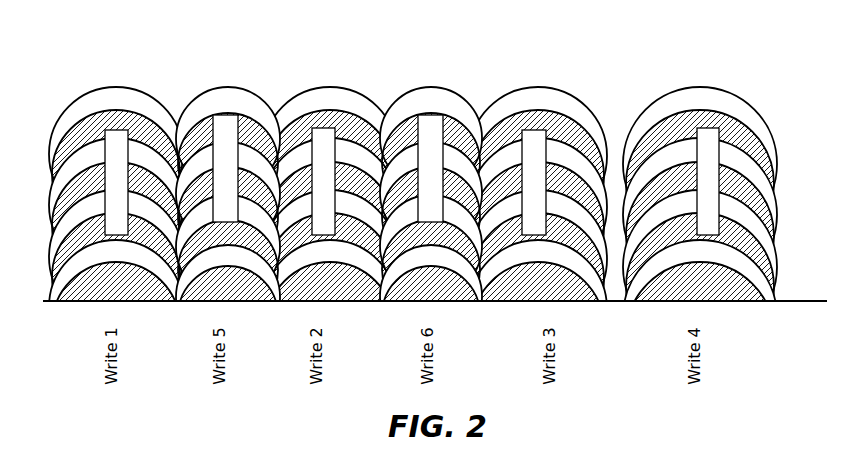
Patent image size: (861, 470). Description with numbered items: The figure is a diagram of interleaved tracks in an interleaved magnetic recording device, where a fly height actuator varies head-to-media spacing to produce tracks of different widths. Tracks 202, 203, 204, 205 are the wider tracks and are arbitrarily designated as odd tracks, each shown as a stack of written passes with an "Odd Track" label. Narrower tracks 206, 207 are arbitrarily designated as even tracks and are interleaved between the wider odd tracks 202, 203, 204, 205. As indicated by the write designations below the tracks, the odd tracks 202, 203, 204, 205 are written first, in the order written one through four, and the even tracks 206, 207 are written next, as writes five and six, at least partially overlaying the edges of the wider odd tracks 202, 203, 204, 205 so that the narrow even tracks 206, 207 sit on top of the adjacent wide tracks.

The odd track 202 is at (117, 88).
The odd track 203 is at (328, 88).
The odd track 204 is at (540, 87).
The odd track 205 is at (697, 88).
The even track 206 is at (228, 88).
The even track 207 is at (431, 89).